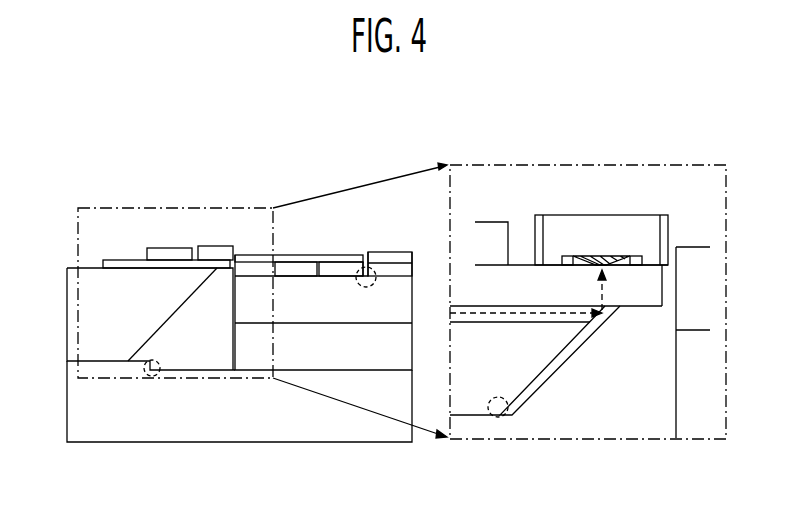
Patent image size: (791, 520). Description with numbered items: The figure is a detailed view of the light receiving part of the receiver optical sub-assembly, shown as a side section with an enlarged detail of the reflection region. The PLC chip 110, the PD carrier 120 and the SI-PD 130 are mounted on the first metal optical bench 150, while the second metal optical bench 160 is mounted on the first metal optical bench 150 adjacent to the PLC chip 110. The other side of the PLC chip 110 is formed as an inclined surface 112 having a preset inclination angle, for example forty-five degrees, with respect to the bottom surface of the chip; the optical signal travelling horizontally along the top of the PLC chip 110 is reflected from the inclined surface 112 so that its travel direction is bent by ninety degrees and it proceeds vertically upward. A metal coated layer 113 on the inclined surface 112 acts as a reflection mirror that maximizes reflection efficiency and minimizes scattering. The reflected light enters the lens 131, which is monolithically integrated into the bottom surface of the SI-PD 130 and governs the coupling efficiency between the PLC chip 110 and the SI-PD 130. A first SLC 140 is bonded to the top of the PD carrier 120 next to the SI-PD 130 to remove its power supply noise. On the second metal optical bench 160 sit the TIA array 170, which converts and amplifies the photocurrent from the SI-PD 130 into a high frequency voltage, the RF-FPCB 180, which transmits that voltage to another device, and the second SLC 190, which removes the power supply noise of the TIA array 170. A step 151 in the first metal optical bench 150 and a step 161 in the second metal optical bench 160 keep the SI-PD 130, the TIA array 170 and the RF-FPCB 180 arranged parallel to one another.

The PLC chip 110 is at (87, 297).
The inclined surface 112 is at (143, 340).
The metal coated layer 113 is at (540, 390).
The PD carrier 120 is at (118, 259).
The SI-PD 130 is at (213, 251).
The lens 131 is at (602, 257).
The first SLC 140 is at (168, 254).
The first metal optical bench 150 is at (87, 420).
The step 151 is at (141, 372).
The second metal optical bench 160 is at (405, 298).
The step 161 is at (360, 286).
The TIA array 170 is at (302, 257).
The RF-FPCB 180 is at (391, 257).
The second SLC 190 is at (345, 266).